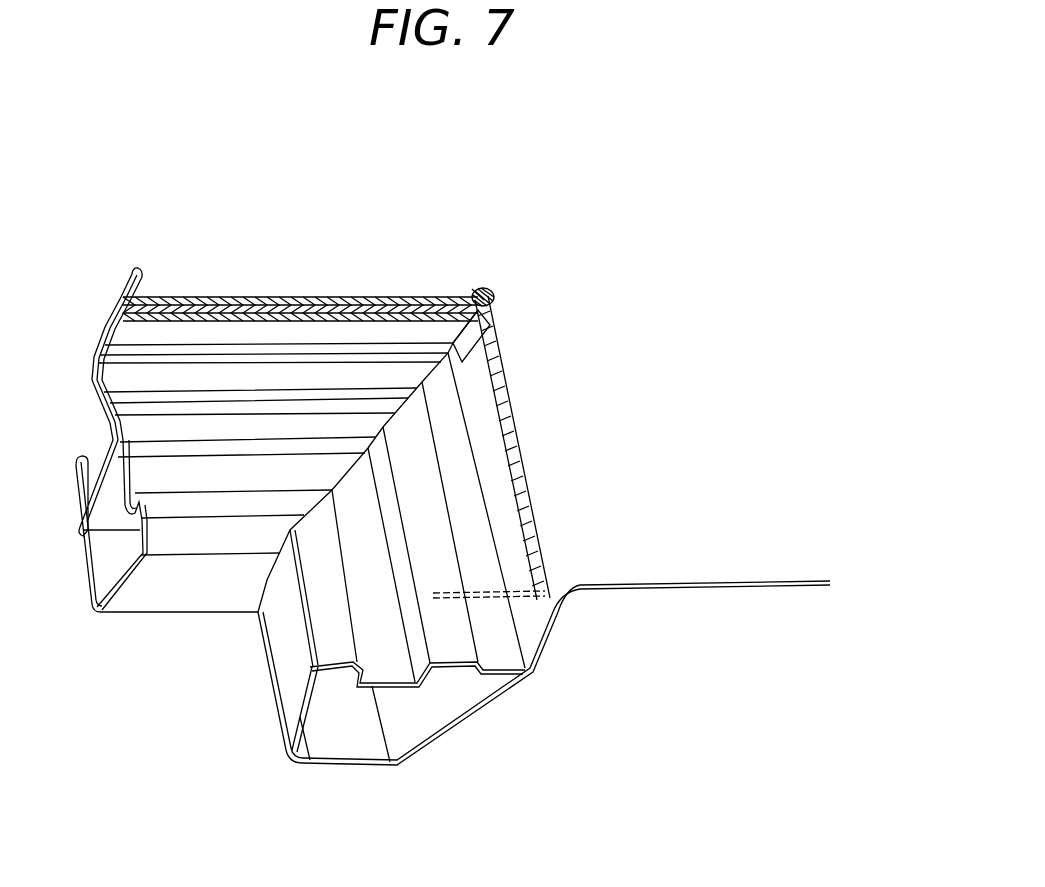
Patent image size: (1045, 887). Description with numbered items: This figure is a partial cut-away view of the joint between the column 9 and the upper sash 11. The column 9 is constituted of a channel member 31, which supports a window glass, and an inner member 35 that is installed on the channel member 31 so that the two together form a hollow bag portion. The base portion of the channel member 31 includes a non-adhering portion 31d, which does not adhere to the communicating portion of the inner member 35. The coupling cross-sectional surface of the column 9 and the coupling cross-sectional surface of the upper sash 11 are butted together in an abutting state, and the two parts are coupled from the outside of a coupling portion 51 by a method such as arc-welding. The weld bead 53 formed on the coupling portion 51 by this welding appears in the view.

The upper sash 11 is at (278, 332).
The coupling portion 51 is at (477, 290).
The weld bead 53 is at (496, 296).
The non-adhering portion 31d is at (465, 342).
The channel member 31 is at (335, 487).
The inner member 35 is at (495, 700).
The column 9 is at (583, 668).